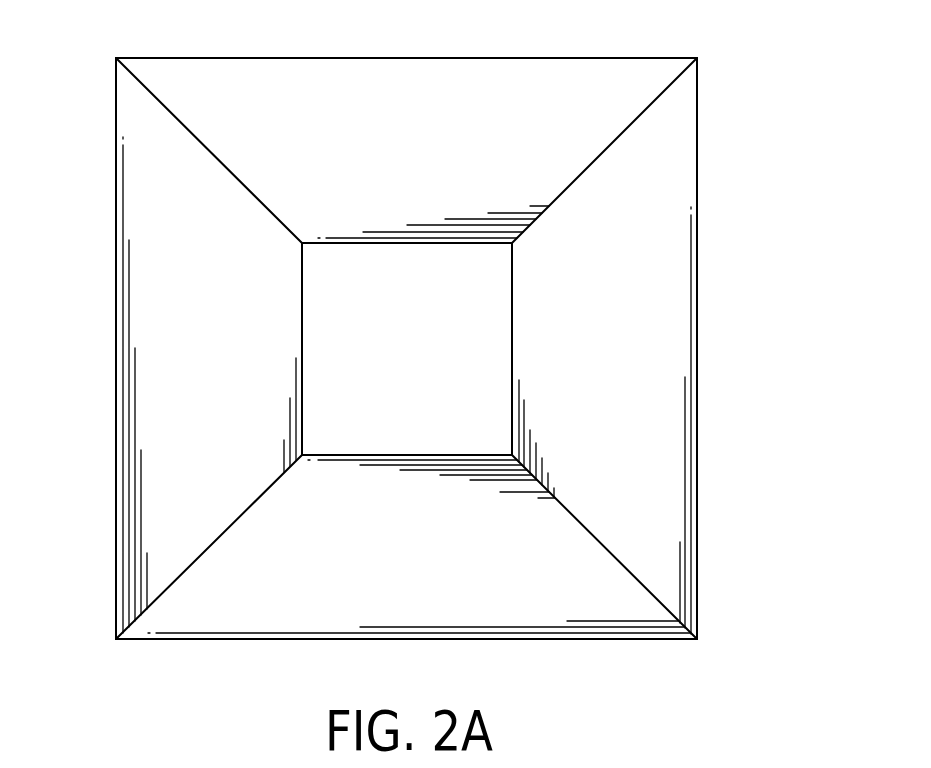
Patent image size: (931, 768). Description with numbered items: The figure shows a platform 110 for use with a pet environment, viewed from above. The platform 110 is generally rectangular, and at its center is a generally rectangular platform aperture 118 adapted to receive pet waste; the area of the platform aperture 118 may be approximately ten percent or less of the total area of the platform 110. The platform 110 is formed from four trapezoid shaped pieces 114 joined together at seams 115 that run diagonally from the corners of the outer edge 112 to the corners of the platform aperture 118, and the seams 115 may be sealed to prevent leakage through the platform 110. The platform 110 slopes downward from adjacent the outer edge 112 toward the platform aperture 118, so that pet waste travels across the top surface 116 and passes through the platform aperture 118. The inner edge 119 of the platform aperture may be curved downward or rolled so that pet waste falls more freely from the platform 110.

The platform 110 is at (772, 101).
The outer edge 112 is at (697, 198).
The trapezoid shaped pieces 114 is at (467, 90).
The seams 115 is at (232, 174).
The top surface 116 is at (238, 300).
The platform aperture 118 is at (430, 373).
The inner edge 119 is at (368, 245).